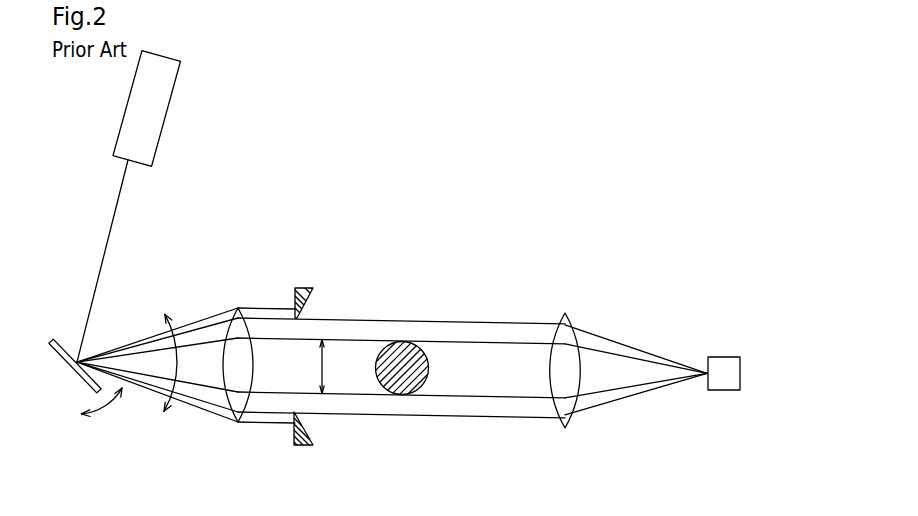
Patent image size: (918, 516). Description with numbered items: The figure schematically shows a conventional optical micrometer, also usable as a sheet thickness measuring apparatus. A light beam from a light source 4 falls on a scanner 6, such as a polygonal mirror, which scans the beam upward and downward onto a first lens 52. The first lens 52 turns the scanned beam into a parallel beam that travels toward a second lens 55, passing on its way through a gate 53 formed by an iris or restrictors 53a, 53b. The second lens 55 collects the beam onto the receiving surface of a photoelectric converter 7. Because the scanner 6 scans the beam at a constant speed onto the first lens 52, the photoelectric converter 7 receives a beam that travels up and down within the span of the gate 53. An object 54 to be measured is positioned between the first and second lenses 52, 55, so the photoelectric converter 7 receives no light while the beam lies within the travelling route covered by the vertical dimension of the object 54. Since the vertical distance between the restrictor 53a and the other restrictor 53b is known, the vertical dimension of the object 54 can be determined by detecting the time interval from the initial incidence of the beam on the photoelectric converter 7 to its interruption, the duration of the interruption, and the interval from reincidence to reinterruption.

The light source 4 is at (172, 102).
The scanner 6 is at (52, 341).
The first lens 52 is at (240, 306).
The gate 53 is at (328, 369).
The iris or restrictor 53a is at (313, 292).
The restrictor 53b is at (296, 446).
The object to be measured 54 is at (387, 396).
The second lens 55 is at (567, 316).
The photoelectric converter 7 is at (727, 362).